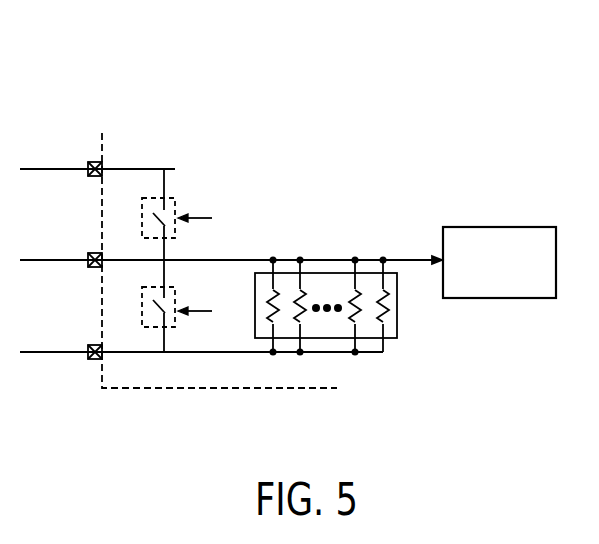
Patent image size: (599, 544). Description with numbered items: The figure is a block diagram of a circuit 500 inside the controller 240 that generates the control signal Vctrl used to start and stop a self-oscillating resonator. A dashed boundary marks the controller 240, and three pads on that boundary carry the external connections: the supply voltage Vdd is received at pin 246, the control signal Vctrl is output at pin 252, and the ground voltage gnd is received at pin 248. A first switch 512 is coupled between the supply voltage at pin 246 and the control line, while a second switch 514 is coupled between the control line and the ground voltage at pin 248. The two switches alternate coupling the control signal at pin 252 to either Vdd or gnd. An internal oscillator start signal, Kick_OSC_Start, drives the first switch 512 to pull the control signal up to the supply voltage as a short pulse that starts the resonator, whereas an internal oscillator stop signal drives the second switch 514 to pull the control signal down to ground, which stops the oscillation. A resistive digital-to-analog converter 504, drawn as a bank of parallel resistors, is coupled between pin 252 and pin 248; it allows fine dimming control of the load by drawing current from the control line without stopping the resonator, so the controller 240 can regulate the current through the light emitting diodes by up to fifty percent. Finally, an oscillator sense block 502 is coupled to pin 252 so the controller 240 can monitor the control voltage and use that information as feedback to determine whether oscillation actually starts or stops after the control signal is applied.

The circuit 500 is at (56, 97).
The pin 246 is at (86, 176).
The pin 252 is at (86, 268).
The pin 248 is at (96, 362).
The controller 240 is at (178, 389).
The first switch 512 is at (175, 200).
The second switch 514 is at (142, 304).
The resistive digital-to-analog converter 504 is at (392, 339).
The oscillator sense block 502 is at (501, 299).